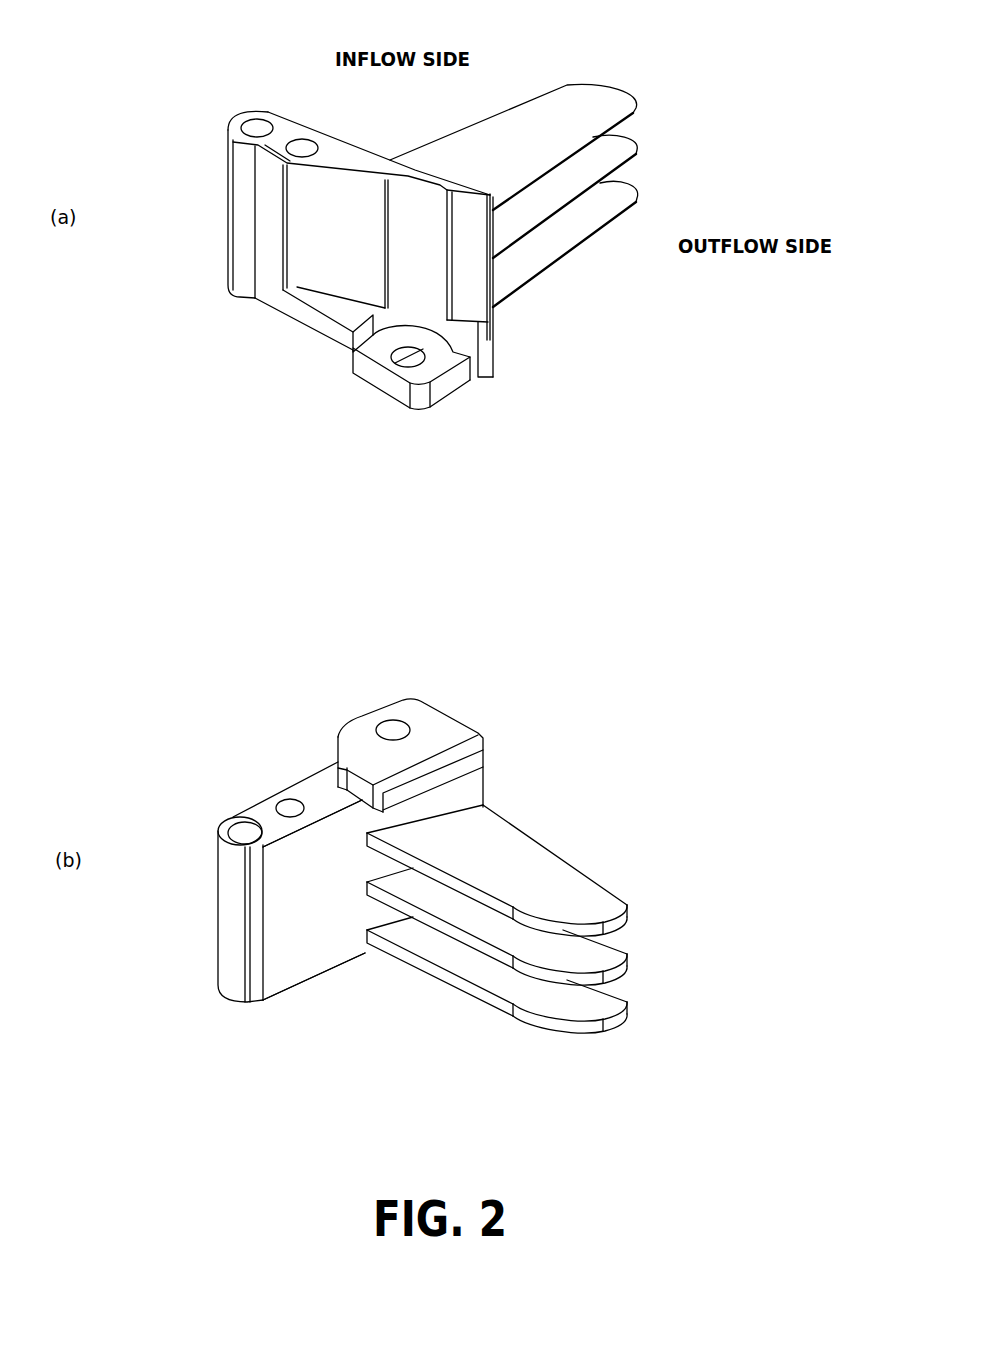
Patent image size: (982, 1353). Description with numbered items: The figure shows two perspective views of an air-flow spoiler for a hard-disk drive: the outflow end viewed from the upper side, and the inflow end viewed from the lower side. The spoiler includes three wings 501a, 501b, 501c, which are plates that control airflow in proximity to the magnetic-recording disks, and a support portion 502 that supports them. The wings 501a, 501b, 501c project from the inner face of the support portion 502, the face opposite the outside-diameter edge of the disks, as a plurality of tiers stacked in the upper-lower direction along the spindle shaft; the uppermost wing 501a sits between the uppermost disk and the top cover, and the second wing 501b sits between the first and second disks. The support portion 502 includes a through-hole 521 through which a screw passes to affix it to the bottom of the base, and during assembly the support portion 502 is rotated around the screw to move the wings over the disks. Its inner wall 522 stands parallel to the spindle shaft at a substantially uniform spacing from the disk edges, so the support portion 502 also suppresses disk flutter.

The wing 501a is at (603, 86).
The wing 501b is at (639, 149).
The wing 501c is at (604, 231).
The support portion 502 is at (262, 184).
The through-hole 521 is at (425, 348).
The inner wall 522 is at (292, 940).